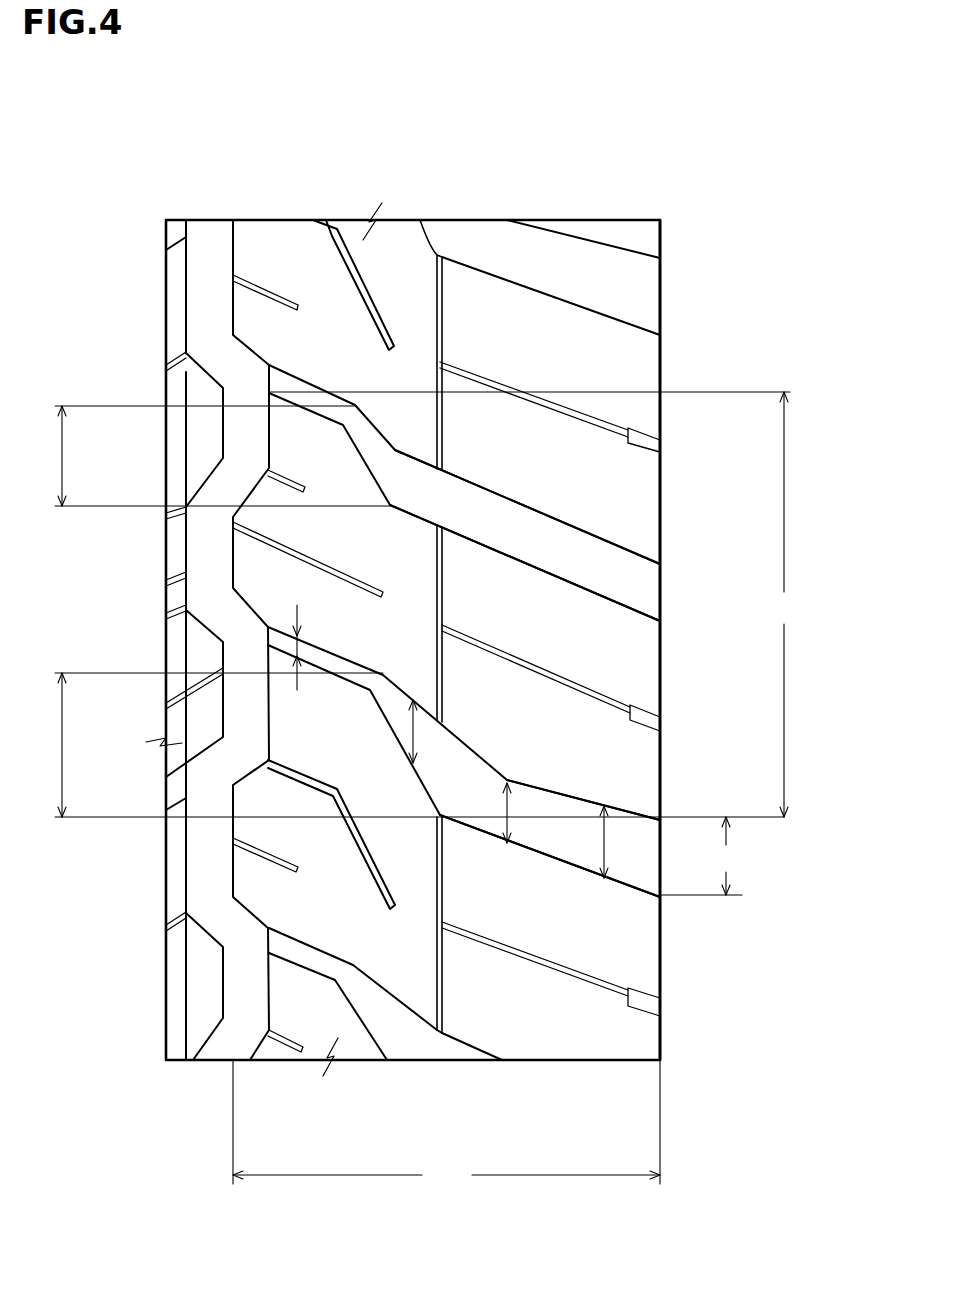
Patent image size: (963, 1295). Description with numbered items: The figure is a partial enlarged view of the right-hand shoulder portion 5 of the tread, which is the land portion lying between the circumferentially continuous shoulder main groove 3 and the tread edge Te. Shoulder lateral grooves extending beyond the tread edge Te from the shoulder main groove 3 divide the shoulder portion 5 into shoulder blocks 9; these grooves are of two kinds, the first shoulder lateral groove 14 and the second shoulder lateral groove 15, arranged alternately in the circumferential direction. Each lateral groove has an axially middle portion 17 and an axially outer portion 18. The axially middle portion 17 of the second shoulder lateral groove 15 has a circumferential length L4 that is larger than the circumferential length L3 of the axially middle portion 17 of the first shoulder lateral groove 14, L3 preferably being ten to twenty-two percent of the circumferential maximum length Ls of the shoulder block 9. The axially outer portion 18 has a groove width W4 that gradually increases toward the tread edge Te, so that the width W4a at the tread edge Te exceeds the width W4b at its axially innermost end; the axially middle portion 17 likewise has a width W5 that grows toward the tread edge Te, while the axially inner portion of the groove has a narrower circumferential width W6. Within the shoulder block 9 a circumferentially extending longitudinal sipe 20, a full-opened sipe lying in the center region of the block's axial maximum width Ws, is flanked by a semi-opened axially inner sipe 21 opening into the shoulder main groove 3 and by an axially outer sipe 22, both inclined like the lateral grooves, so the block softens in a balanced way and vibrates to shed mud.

The shoulder main groove 3 is at (209, 250).
The shoulder portion 5 is at (314, 591).
The shoulder block 9 is at (282, 250).
The first shoulder lateral groove 14 is at (599, 566).
The second shoulder lateral groove 15 is at (626, 838).
The axially middle portion 17 is at (376, 444).
The axially outer portion 18 is at (506, 526).
The longitudinal sipe 20 is at (441, 316).
The axially inner sipe 21 is at (293, 478).
The axially outer sipe 22 is at (506, 380).
The tread edge Te is at (661, 245).
The circumferential length of the axially middle portion of the first shoulder later L3 is at (217, 456).
The circumferential length of the axially middle portion of the second shoulder late L4 is at (414, 745).
The circumferential maximum length of the shoulder block Ls is at (534, 604).
The groove width of the axially outer portion W4 is at (603, 846).
The groove width at the tread edge W4a is at (709, 856).
The groove width at the axially innermost of the axially outer portion W4b is at (506, 813).
The groove width of the axially middle portion W5 is at (412, 732).
The circumferential groove width of the axially inner portion W6 is at (298, 650).
The axial maximum width of the shoulder block Ws is at (446, 1125).